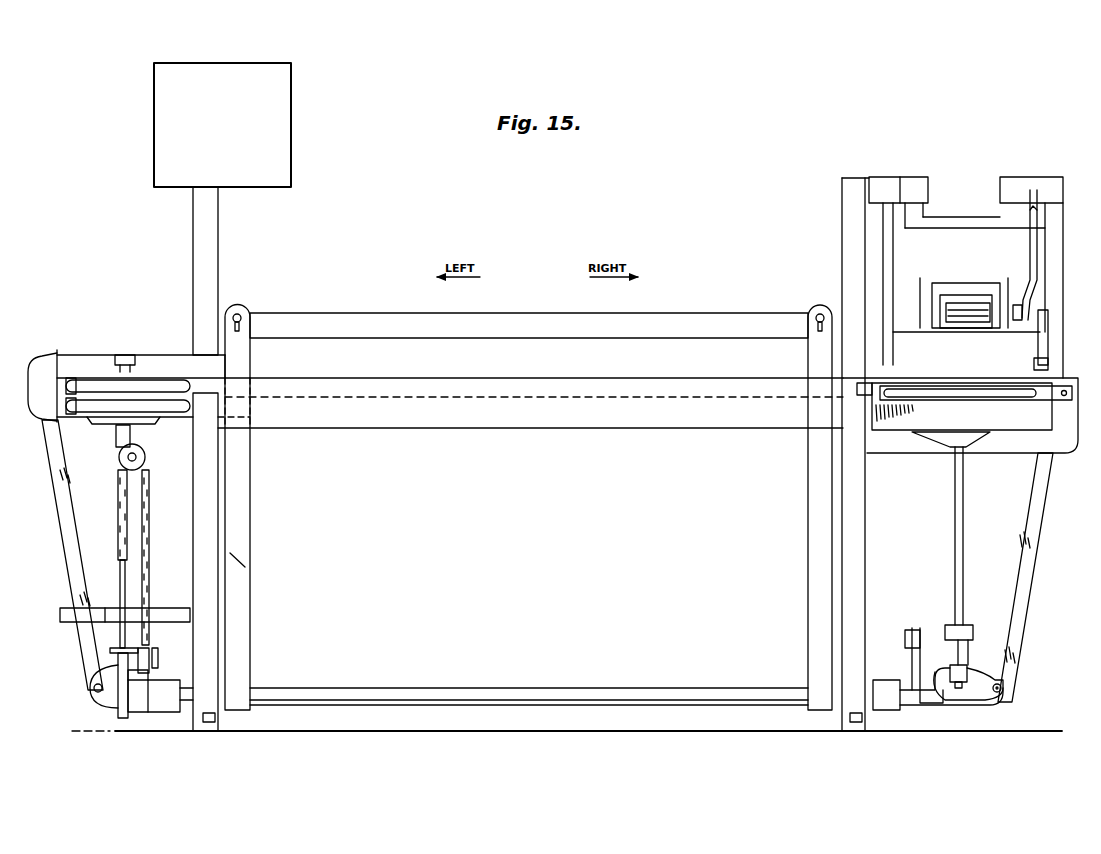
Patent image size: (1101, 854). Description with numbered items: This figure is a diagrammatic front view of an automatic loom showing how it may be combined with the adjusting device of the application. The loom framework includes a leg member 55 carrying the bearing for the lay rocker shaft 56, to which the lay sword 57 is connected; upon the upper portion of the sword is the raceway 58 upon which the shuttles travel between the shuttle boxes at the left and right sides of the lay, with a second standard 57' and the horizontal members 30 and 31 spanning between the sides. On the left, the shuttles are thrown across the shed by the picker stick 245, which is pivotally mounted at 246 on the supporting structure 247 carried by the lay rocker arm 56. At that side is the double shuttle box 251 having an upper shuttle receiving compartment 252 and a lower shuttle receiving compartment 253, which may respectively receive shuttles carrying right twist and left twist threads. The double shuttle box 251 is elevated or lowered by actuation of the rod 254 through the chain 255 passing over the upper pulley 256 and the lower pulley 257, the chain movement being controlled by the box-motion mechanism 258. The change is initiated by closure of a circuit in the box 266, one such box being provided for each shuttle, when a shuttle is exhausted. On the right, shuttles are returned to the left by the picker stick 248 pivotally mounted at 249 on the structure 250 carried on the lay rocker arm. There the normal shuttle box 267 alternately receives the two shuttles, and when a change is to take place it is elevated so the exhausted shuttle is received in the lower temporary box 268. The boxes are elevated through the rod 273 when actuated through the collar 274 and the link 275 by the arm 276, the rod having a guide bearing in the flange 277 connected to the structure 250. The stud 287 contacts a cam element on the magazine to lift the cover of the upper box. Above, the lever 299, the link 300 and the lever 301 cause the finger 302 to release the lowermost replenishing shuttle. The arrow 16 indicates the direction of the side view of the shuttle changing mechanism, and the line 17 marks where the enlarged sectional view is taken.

The box-motion mechanism 258 is at (278, 103).
The upper shuttle receiving compartment 252 is at (200, 385).
The lower shuttle receiving compartment 253 is at (204, 410).
The double shuttle box 251 is at (60, 393).
The box 266 is at (125, 360).
The upper rail 31 is at (465, 357).
The main bar 30 is at (493, 432).
The raceway 58 is at (333, 415).
The left standard 57' is at (264, 507).
The lay sword 57 is at (794, 507).
The lay rocker shaft 56 is at (548, 690).
The picker stick 245 is at (67, 522).
The rod 254 is at (124, 440).
The upper pulley 256 is at (120, 470).
The chain 255 is at (128, 556).
The lower pulley 257 is at (150, 650).
The supporting structure 247 is at (141, 712).
The pivot 246 is at (94, 692).
The leg member 55 is at (204, 703).
The lever 299 is at (1038, 220).
The link 300 is at (1037, 250).
The finger 302 is at (966, 316).
The section line 17 is at (985, 248).
The lever 301 is at (1020, 322).
The stud 287 is at (1050, 362).
The lower temporary box 268 is at (960, 415).
The normal shuttle box 267 is at (1031, 393).
The rod 273 is at (955, 549).
The flange 277 is at (968, 628).
The collar 274 is at (970, 670).
The arm 276 is at (920, 632).
The link 275 is at (910, 650).
The structure 250 is at (963, 712).
The pivot 249 is at (1002, 698).
The picker stick 248 is at (1025, 574).
The view arrow 16 is at (1040, 528).